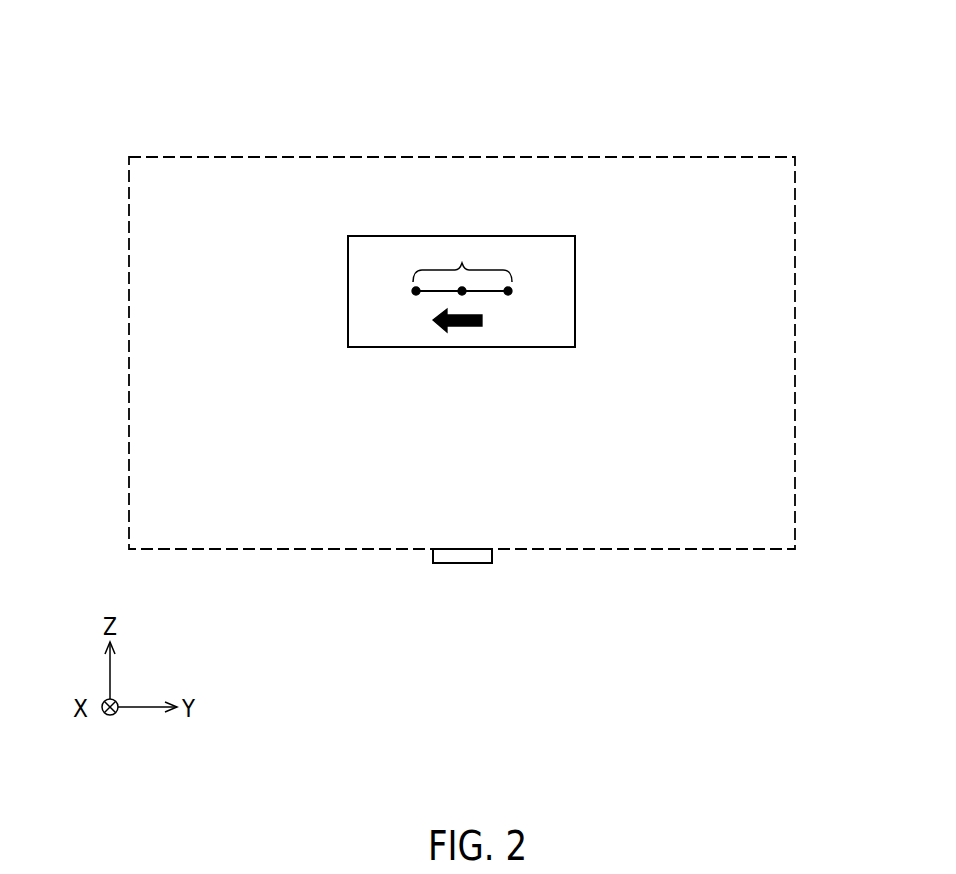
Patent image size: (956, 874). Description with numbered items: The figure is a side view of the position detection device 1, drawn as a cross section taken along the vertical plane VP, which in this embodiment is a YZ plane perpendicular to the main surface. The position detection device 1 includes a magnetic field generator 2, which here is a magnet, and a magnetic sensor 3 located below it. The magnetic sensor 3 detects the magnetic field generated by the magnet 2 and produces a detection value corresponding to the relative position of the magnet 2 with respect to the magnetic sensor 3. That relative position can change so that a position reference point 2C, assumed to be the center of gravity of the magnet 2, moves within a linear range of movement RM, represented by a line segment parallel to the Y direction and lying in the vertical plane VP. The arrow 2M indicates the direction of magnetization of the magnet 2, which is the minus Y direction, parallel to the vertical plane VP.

The position detection device 1 is at (521, 100).
The vertical plane VP is at (683, 156).
The magnetic field generator (magnet) 2 is at (548, 236).
The range of movement RM is at (462, 263).
The position reference point 2C is at (464, 293).
The direction of magnetization 2M is at (462, 327).
The magnetic sensor 3 is at (472, 563).